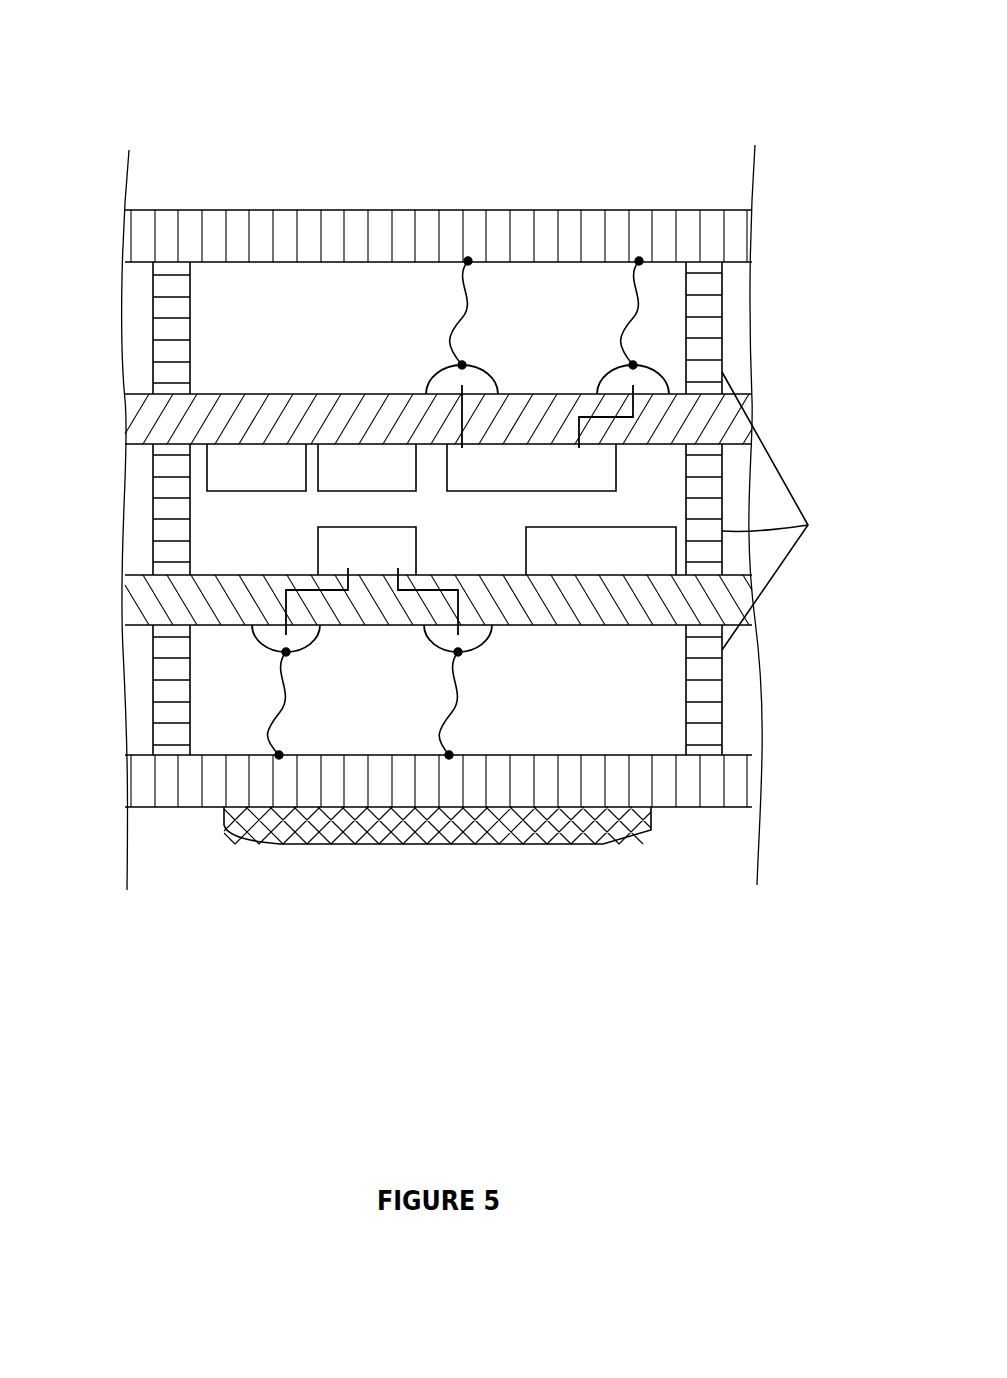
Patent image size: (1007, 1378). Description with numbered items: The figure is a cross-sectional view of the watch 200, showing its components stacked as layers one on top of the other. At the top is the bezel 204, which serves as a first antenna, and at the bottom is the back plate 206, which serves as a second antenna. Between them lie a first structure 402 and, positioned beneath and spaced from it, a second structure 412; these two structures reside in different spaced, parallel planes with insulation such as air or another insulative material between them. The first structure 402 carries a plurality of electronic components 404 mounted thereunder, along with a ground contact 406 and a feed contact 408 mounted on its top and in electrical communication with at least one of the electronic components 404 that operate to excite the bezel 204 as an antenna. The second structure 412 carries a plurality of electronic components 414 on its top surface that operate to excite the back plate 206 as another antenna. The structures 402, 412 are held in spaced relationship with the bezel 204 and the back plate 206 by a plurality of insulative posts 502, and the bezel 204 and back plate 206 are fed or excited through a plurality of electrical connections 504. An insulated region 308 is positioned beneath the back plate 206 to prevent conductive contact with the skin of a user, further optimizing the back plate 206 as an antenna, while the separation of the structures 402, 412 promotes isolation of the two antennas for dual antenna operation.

The watch 200 is at (672, 66).
The bezel 204 is at (623, 210).
The back plate 206 is at (673, 807).
The insulated region 308 is at (482, 845).
The first structure 402 is at (137, 418).
The electronic components 404 is at (217, 491).
The ground contact 406 is at (627, 368).
The feed contact 408 is at (453, 370).
The second structure 412 is at (143, 615).
The electronic components 414 is at (526, 527).
The insulative posts 502 is at (808, 525).
The electrical connections 504 is at (455, 305).